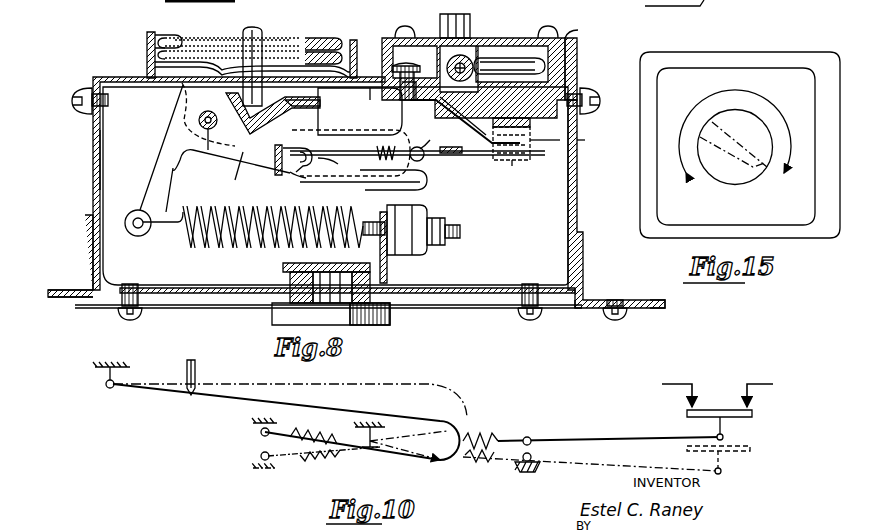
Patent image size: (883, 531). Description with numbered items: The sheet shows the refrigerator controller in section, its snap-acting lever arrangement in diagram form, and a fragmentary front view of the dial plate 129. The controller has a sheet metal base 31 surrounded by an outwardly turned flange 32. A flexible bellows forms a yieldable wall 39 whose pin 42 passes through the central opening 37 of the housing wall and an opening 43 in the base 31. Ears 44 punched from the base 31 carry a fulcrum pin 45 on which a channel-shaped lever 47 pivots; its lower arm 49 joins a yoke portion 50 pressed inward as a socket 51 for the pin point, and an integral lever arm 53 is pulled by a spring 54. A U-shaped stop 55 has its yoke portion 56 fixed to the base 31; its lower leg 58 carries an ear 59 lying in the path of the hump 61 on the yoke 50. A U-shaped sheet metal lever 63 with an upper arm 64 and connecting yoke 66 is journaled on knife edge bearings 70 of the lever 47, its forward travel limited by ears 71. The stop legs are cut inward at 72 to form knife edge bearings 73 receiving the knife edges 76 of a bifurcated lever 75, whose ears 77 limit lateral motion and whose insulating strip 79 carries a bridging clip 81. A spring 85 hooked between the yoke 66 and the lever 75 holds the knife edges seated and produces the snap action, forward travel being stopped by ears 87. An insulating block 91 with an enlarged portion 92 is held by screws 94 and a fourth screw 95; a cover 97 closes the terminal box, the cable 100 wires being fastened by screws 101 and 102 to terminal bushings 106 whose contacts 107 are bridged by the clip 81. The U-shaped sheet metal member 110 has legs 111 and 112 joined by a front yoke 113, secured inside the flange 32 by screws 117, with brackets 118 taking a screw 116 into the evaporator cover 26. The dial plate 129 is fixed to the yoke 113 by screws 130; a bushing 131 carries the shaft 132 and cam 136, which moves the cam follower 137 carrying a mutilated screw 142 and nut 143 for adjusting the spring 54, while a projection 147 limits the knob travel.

In FIG. 8, the evaporator cover 26 is at (662, 312).
In FIG. 8, the base 31 is at (97, 77).
In FIG. 8, the outwardly turned flange 32 is at (80, 90).
In FIG. 8, the central opening 37 is at (240, 62).
In FIG. 8, the yieldable wall 39 is at (165, 34).
In FIG. 8, the pin 42 is at (262, 44).
In FIG. 10, the pin 42 is at (196, 372).
In FIG. 8, the opening 43 is at (285, 56).
In FIG. 8, the ears 44 is at (198, 120).
In FIG. 8, the fulcrum pin 45 is at (210, 150).
In FIG. 10, the fulcrum pin 45 is at (106, 388).
In FIG. 8, the lever 47 is at (178, 100).
In FIG. 8, the lower arm 49 is at (236, 156).
In FIG. 8, the yoke portion 50 is at (335, 66).
In FIG. 10, the yoke portion 50 is at (375, 397).
In FIG. 8, the socket 51 is at (246, 166).
In FIG. 8, the lever arm 53 is at (140, 192).
In FIG. 8, the spring 54 is at (172, 248).
In FIG. 8, the stop 55 is at (408, 100).
In FIG. 8, the yoke portion 56 is at (362, 92).
In FIG. 8, the lower leg 58 is at (412, 128).
In FIG. 8, the ear 59 is at (288, 122).
In FIG. 10, the ear 59 is at (258, 432).
In FIG. 8, the hump 61 is at (308, 90).
In FIG. 8, the sheet metal lever 63 is at (292, 178).
In FIG. 8, the upper arm 64 is at (340, 180).
In FIG. 8, the connecting yoke 66 is at (277, 176).
In FIG. 10, the knife edge bearing 70 is at (440, 468).
In FIG. 8, the ears 71 is at (320, 178).
In FIG. 10, the ears 71 is at (258, 458).
In FIG. 8, the cut-in edge 72 is at (366, 148).
In FIG. 8, the knife edge bearings 73 is at (306, 150).
In FIG. 10, the knife edge bearings 73 is at (368, 450).
In FIG. 8, the bifurcated lever 75 is at (470, 158).
In FIG. 10, the bifurcated lever 75 is at (584, 440).
In FIG. 8, the knife edges 76 is at (410, 182).
In FIG. 8, the ears 77 is at (376, 184).
In FIG. 8, the insulating strip 79 is at (492, 162).
In FIG. 8, the clip 81 is at (514, 168).
In FIG. 10, the clip 81 is at (745, 418).
In FIG. 10, the spring 85 is at (480, 438).
In FIG. 8, the ears 87 is at (412, 160).
In FIG. 10, the ears 87 is at (540, 466).
In FIG. 8, the insulating block 91 is at (484, 116).
In FIG. 8, the enlarged portion 92 is at (577, 62).
In FIG. 8, the screws 94 is at (576, 32).
In FIG. 8, the fourth screw 95 is at (416, 40).
In FIG. 8, the cover 97 is at (546, 34).
In FIG. 8, the cable 100 is at (472, 19).
In FIG. 10, the screw 101 is at (688, 408).
In FIG. 8, the screw 102 is at (472, 58).
In FIG. 10, the screw 102 is at (752, 408).
In FIG. 8, the terminal bushings 106 is at (586, 146).
In FIG. 8, the contacts 107 is at (530, 162).
In FIG. 8, the U-shaped sheet metal member 110 is at (574, 312).
In FIG. 8, the leg 111 is at (96, 158).
In FIG. 8, the leg 112 is at (578, 214).
In FIG. 8, the front yoke 113 is at (432, 308).
In FIG. 8, the screw 116 is at (607, 322).
In FIG. 8, the screws 117 is at (90, 108).
In FIG. 8, the brackets 118 is at (85, 232).
In FIG. 8, the dial plate 129 is at (170, 296).
In FIG. 15, the dial plate 129 is at (776, 62).
In FIG. 8, the screws 130 is at (132, 320).
In FIG. 8, the bushing 131 is at (285, 326).
In FIG. 8, the shaft 132 is at (362, 326).
In FIG. 8, the cam 136 is at (284, 266).
In FIG. 8, the cam follower 137 is at (440, 206).
In FIG. 8, the mutilated screw 142 is at (462, 232).
In FIG. 8, the nut 143 is at (446, 244).
In FIG. 8, the projection 147 is at (390, 270).